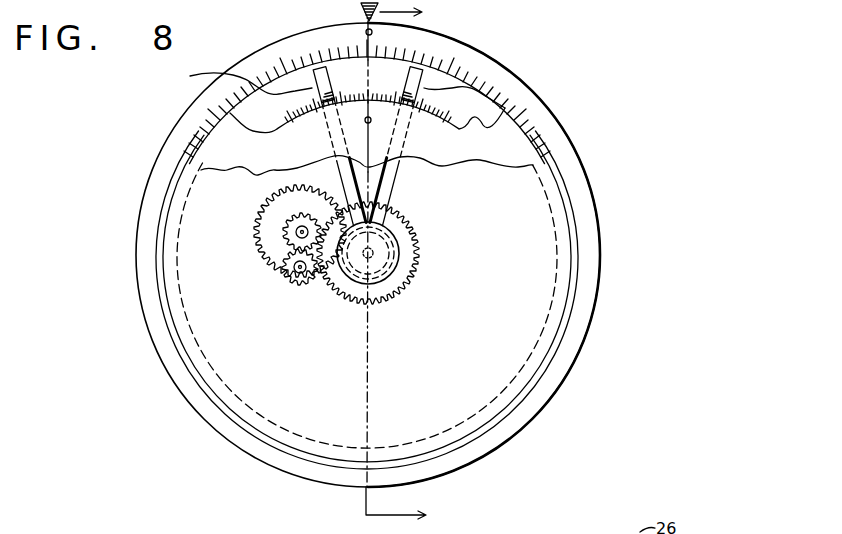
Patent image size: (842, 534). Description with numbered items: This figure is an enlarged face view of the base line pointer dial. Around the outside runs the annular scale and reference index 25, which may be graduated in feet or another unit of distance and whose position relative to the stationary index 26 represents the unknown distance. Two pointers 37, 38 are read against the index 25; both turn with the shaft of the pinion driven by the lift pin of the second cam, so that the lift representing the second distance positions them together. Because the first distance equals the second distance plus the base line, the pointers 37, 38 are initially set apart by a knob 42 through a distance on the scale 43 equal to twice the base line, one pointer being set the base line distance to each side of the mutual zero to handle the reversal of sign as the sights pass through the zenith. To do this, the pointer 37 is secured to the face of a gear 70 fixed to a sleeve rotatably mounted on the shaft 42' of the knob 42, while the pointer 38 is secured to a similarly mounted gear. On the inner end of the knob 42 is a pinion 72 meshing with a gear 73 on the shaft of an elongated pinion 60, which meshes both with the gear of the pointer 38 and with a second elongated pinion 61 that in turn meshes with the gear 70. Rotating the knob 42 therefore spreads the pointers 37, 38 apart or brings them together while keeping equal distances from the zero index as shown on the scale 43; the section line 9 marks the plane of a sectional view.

The section line 9- 9 is at (405, 266).
The annular scale and reference index 25 is at (370, 47).
The stationary index 26 is at (361, 9).
The pointer 37 is at (190, 76).
The pointer 38 is at (495, 80).
The scale 43 is at (505, 108).
The knob 42 is at (404, 253).
The shaft of knob 42' is at (375, 158).
The pinion 72 is at (390, 232).
The gear 70 is at (389, 290).
The gear 73 is at (284, 201).
The elongated pinion 60 is at (287, 228).
The second elongated pinion 61 is at (290, 278).